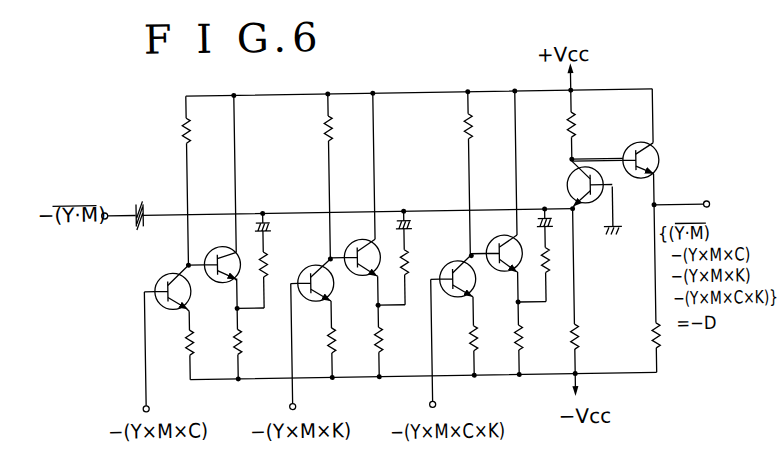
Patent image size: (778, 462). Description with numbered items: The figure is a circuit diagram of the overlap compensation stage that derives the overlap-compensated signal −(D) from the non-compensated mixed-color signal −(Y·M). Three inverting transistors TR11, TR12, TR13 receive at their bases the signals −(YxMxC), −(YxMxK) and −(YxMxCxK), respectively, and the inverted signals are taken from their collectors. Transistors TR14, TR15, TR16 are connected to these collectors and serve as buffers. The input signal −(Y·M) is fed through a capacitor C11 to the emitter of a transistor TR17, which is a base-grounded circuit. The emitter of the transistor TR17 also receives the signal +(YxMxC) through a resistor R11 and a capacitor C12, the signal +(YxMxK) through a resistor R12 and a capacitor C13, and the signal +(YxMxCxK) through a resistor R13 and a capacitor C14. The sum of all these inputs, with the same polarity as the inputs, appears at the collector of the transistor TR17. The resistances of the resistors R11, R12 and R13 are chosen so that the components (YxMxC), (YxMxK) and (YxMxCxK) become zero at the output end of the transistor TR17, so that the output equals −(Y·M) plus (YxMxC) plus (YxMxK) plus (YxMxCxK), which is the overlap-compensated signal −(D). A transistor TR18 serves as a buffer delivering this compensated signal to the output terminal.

The transistor TR11 is at (161, 277).
The transistor TR12 is at (311, 266).
The transistor TR13 is at (451, 264).
The transistor TR14 is at (214, 250).
The transistor TR15 is at (355, 245).
The transistor TR16 is at (496, 243).
The transistor TR17 is at (593, 170).
The transistor TR18 is at (634, 155).
The capacitor C11 is at (147, 205).
The capacitor C12 is at (269, 220).
The capacitor C13 is at (410, 219).
The capacitor C14 is at (547, 216).
The resistor R11 is at (278, 279).
The resistor R12 is at (420, 277).
The resistor R13 is at (559, 274).